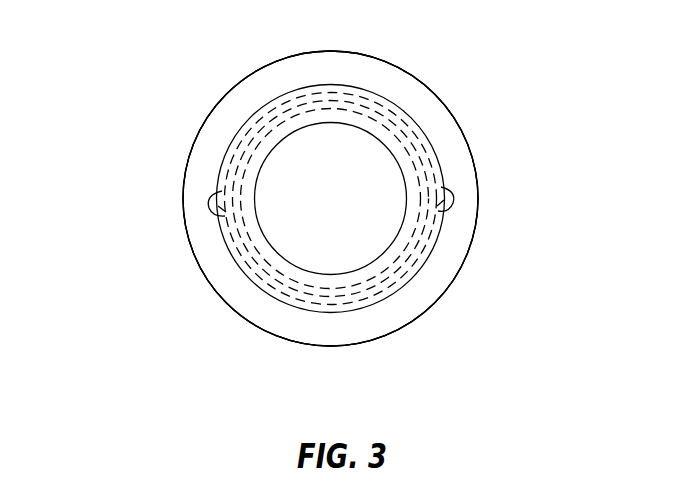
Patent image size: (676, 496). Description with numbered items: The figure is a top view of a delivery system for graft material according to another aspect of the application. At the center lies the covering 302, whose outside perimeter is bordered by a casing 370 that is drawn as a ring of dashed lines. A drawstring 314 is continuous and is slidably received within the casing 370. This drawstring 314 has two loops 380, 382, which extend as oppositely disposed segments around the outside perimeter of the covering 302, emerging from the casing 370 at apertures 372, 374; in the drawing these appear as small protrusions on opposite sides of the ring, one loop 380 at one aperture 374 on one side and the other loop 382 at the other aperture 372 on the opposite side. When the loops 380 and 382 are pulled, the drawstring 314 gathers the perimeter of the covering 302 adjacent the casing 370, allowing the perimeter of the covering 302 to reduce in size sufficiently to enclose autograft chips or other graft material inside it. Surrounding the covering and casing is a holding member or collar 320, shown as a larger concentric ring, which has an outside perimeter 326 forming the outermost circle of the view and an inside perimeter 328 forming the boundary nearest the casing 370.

The covering 302 is at (430, 267).
The drawstring 314 is at (383, 284).
The holding member or collar 320 is at (236, 101).
The outside perimeter 326 is at (401, 70).
The inside perimeter 328 is at (416, 120).
The casing 370 is at (280, 289).
The aperture 372 is at (432, 196).
The aperture 374 is at (227, 213).
The loop 380 is at (221, 207).
The loop 382 is at (446, 207).